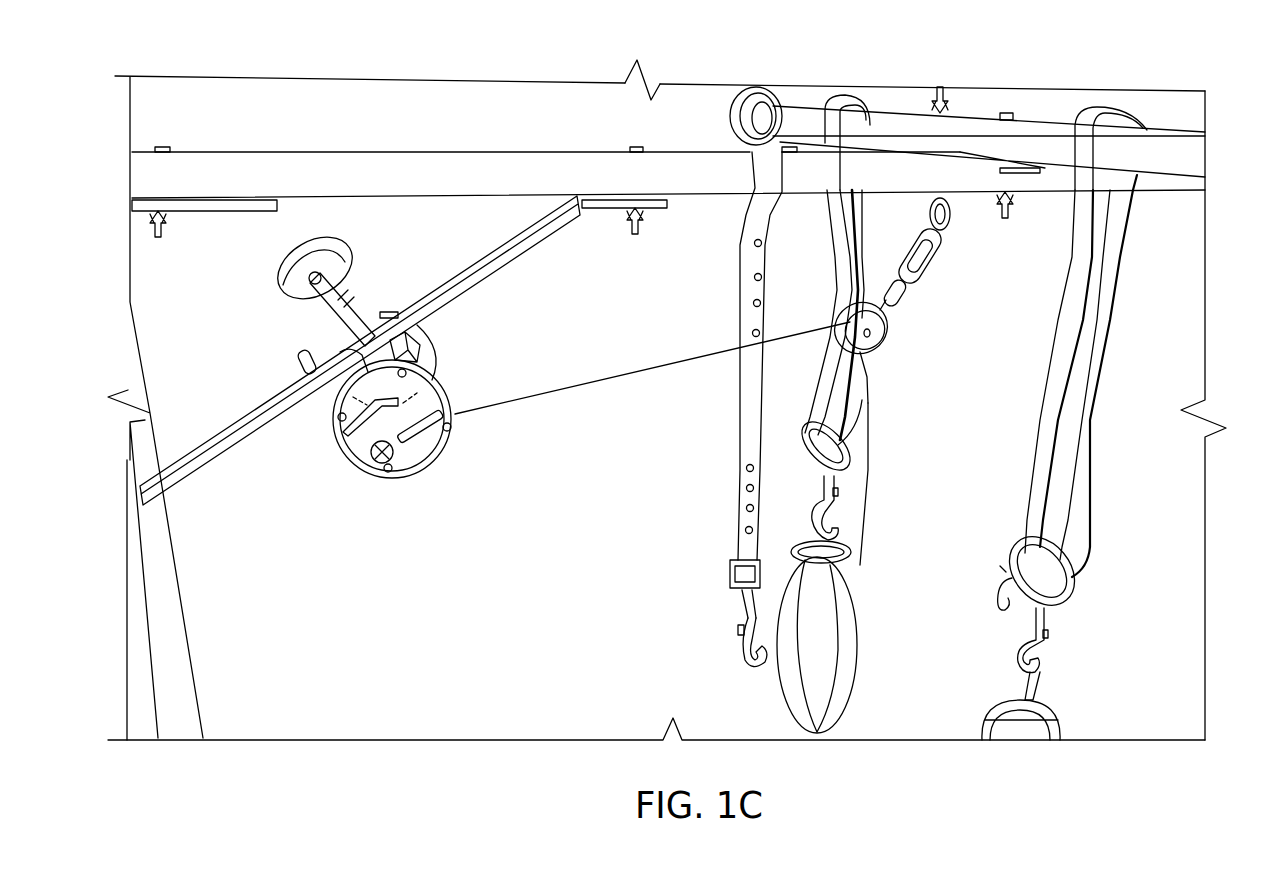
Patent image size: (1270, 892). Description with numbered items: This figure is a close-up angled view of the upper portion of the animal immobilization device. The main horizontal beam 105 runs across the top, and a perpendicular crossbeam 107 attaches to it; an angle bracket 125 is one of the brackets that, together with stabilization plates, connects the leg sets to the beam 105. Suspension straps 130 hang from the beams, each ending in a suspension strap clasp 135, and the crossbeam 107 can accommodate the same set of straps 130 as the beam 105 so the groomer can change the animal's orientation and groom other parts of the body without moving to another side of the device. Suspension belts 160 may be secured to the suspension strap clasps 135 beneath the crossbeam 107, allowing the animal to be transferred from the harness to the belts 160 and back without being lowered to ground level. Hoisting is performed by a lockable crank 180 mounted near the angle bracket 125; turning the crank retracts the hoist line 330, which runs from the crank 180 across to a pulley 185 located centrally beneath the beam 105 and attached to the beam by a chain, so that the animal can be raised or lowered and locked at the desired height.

The beam 105 is at (372, 166).
The crossbeam 107 is at (893, 114).
The angle bracket 125 is at (197, 445).
The suspension strap 130 is at (740, 265).
The suspension strap clasp 135 is at (738, 607).
The suspension belt 160 is at (848, 637).
The lockable crank 180 is at (357, 445).
The pulley 185 is at (885, 322).
The hoist line 330 is at (585, 383).